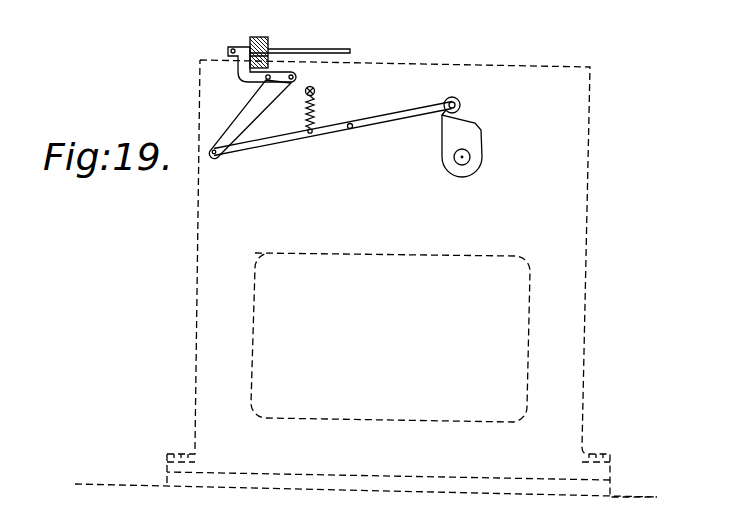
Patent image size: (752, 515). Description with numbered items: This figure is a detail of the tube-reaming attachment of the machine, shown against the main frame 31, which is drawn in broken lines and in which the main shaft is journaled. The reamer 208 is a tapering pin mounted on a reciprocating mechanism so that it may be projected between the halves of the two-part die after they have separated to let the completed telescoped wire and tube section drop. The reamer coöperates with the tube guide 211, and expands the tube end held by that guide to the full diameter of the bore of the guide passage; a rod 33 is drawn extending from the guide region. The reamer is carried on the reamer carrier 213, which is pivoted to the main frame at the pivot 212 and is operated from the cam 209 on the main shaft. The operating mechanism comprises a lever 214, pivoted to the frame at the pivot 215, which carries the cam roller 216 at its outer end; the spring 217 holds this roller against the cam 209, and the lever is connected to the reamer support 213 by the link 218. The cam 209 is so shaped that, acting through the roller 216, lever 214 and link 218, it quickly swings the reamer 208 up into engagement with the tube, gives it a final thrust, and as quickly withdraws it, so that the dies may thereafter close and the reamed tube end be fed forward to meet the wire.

The main frame 31 is at (217, 252).
The rod 33 is at (328, 52).
The reamer 208 is at (248, 46).
The tube guide 211 is at (270, 50).
The reamer carrier 213 is at (243, 70).
The pivot 212 is at (267, 79).
The link 218 is at (252, 113).
The lever 214 is at (397, 115).
The lever pivot 215 is at (352, 130).
The spring 217 is at (314, 110).
The cam roller 216 is at (458, 100).
The cam 209 is at (473, 132).